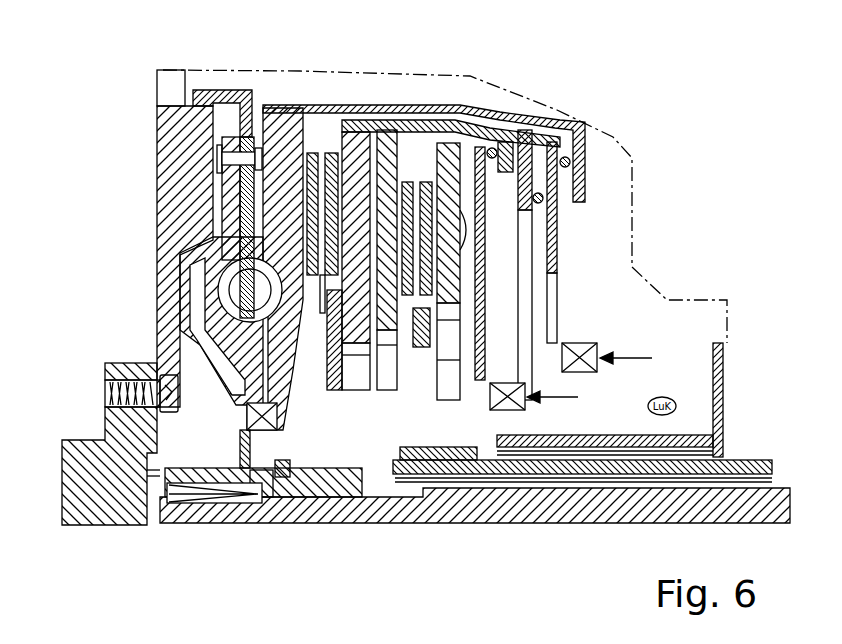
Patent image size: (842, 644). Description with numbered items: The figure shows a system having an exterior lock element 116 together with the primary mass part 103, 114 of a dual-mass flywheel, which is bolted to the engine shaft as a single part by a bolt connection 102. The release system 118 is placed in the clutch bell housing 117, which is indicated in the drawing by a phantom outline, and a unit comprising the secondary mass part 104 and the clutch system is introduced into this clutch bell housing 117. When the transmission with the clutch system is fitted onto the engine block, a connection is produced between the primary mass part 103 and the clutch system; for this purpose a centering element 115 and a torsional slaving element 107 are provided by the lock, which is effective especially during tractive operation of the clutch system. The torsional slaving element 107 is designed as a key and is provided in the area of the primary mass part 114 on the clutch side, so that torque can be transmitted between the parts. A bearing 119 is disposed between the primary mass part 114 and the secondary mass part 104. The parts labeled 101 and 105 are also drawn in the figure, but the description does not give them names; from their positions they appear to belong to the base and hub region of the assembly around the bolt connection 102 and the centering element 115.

The housing base 101 is at (81, 441).
The bolt connection 102 is at (148, 376).
The primary mass part 103 is at (170, 172).
The secondary mass part 104 is at (305, 128).
The hub 105 is at (265, 497).
The torsional slaving element 107 is at (233, 110).
The primary mass part 114 is at (263, 127).
The centering element 115 is at (207, 490).
The exterior lock element 116 is at (210, 91).
The clutch bell housing 117 is at (632, 215).
The release system 118 is at (510, 412).
The bearing 119 is at (285, 415).